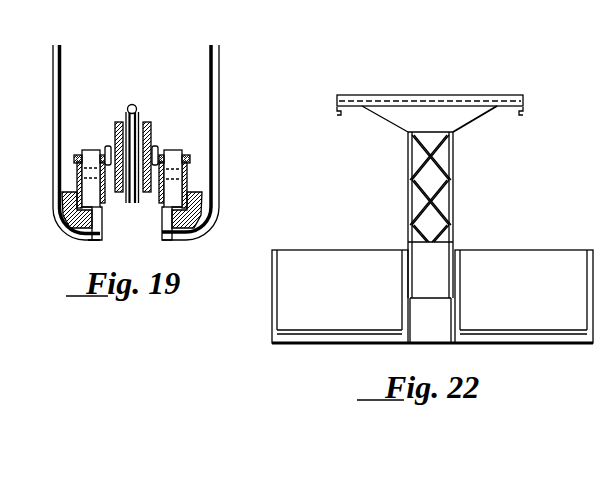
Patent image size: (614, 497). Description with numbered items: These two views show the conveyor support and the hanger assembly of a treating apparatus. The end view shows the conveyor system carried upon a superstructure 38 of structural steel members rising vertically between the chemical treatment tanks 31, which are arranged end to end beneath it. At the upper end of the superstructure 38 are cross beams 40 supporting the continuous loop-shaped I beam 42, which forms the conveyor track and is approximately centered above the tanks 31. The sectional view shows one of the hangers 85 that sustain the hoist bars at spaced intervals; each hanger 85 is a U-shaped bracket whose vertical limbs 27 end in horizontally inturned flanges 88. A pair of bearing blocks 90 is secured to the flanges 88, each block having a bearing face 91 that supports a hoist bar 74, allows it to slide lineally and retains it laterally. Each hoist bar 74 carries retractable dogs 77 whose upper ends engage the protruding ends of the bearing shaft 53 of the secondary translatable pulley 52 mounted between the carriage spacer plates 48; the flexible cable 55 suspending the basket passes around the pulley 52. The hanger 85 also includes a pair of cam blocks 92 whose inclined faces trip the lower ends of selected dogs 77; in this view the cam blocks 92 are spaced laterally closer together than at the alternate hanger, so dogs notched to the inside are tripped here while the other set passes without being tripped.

In FIG. 19, the side wall 27 is at (62, 77).
In FIG. 19, the hanger 85 is at (220, 121).
In FIG. 19, the bearing block 90 is at (62, 197).
In FIG. 19, the bearing face 91 is at (60, 215).
In FIG. 19, the retractable latch or dog 77 is at (90, 149).
In FIG. 19, the hoist bar 74 is at (74, 164).
In FIG. 19, the cam block or skid 92 is at (162, 223).
In FIG. 19, the inturned flange 88 is at (100, 240).
In FIG. 19, the spacer plate 48 is at (116, 122).
In FIG. 19, the bearing shaft 53 is at (183, 148).
In FIG. 19, the secondary translatable pulley 52 is at (139, 110).
In FIG. 19, the flexible cable 55 is at (132, 104).
In FIG. 22, the cross beam 40 is at (416, 95).
In FIG. 22, the I beam 42 is at (340, 114).
In FIG. 22, the superstructure 38 is at (452, 187).
In FIG. 22, the chemical treatment tank 31 is at (342, 244).